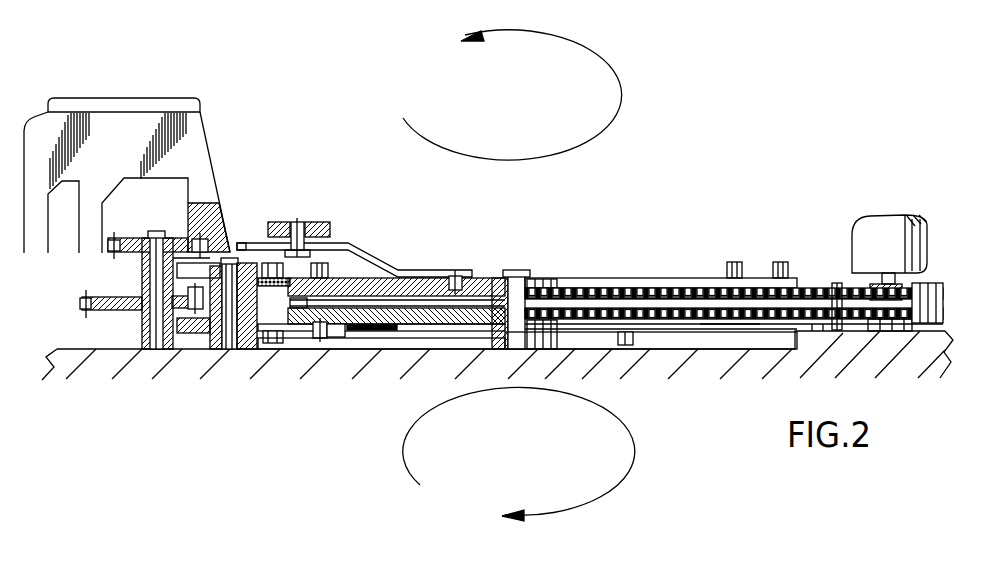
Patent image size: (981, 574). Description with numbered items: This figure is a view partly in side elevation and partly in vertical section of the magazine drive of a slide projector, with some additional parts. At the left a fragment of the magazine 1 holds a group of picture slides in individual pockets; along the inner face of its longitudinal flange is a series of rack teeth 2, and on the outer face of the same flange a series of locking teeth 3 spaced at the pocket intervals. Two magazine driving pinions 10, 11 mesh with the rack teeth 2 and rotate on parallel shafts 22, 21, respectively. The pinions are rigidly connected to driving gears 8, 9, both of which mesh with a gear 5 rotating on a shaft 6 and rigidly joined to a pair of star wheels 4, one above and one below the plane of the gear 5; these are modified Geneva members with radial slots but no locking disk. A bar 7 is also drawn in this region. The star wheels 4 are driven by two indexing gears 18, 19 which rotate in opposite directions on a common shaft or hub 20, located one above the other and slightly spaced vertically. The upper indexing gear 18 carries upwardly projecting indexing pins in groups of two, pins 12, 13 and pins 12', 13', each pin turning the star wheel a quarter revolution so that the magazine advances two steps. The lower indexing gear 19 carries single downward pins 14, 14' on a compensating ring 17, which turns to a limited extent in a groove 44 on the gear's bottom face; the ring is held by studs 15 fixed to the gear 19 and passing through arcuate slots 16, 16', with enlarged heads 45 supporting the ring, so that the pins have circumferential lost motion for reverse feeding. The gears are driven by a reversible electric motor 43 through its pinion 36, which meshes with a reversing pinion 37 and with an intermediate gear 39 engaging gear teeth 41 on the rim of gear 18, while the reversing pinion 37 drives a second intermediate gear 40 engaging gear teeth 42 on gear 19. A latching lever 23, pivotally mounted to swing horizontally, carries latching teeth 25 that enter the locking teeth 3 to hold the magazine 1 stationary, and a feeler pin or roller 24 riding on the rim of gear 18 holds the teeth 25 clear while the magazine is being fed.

The magazine 1 is at (140, 122).
The rack teeth 2 is at (200, 209).
The locking teeth 3 is at (228, 245).
The star wheel 4 is at (203, 322).
The gear 5 is at (140, 319).
The shaft 6 is at (232, 350).
The bar 7 is at (190, 334).
The driving gear 8 is at (71, 314).
The driving gear 9 is at (80, 305).
The magazine driving pinion 10 is at (115, 262).
The magazine driving pinion 11 is at (112, 254).
The indexing pin 12 is at (276, 231).
The indexing pin 13 is at (340, 236).
The indexing pin 14 is at (276, 363).
The stud 15 is at (329, 338).
The arcuate slot 16 is at (381, 376).
The compensating ring 17 is at (378, 333).
The indexing gear 18 is at (410, 278).
The indexing gear 19 is at (422, 332).
The shaft 20 is at (517, 283).
The shaft 21 is at (136, 319).
The shaft 22 is at (153, 340).
The latching lever 23 is at (371, 257).
The pin or roller 24 is at (458, 274).
The latching teeth 25 is at (246, 242).
The motor pinion 36 is at (302, 222).
The reversing pinion 37 is at (932, 284).
The intermediate gear 39 is at (832, 287).
The second intermediate gear 40 is at (851, 333).
The gear teeth 41 is at (747, 289).
The gear teeth 42 is at (754, 321).
The electric motor 43 is at (868, 231).
The groove 44 is at (392, 333).
The enlarged heads 45 is at (343, 334).
The indexing pin 12' is at (788, 248).
The indexing pin 13' is at (732, 245).
The indexing pin 14' is at (633, 368).
The arcuate slot 16' is at (723, 366).